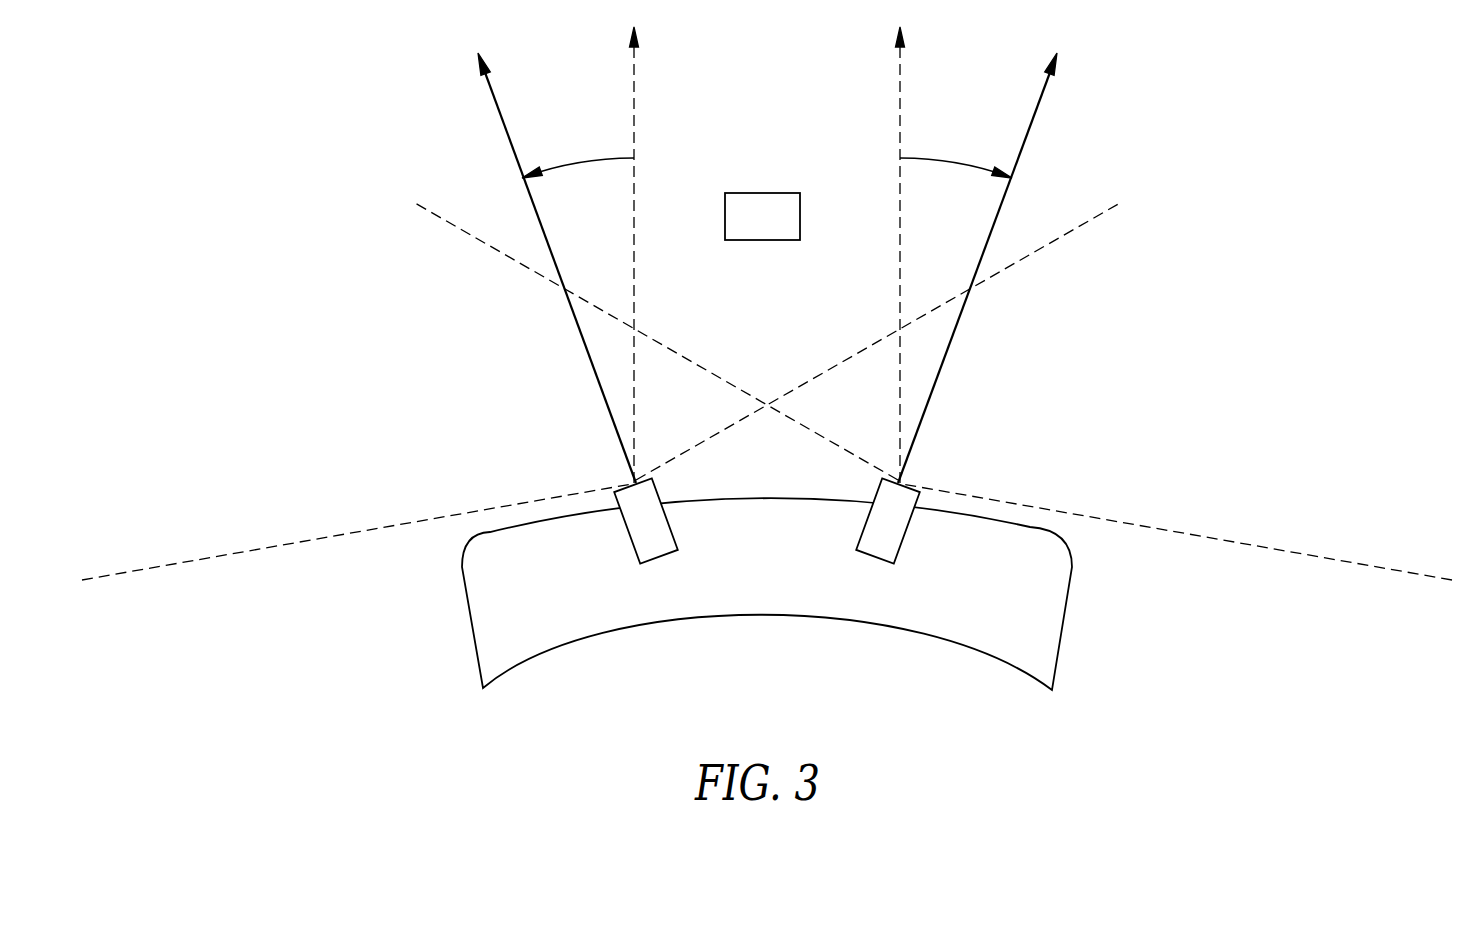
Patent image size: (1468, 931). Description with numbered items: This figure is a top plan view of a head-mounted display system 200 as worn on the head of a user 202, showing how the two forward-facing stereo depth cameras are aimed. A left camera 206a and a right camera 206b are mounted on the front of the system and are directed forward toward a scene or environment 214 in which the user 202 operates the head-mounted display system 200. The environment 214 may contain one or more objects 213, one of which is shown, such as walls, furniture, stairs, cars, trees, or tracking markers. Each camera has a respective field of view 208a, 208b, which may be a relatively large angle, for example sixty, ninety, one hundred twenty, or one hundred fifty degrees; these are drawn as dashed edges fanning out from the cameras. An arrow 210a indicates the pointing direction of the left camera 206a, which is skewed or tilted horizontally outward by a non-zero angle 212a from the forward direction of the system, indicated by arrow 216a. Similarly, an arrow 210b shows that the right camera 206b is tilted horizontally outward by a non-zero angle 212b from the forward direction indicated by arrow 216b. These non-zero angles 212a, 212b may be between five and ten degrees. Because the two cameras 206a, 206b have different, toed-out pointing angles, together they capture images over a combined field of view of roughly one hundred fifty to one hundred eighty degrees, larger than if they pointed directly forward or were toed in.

The head-mounted display system 200 is at (1146, 460).
The user 202 is at (1060, 568).
The left camera 206a is at (660, 555).
The right camera 206b is at (877, 555).
The field of view 208a is at (170, 567).
The field of view 208b is at (1367, 565).
The arrow 210a is at (497, 107).
The arrow 210b is at (1037, 110).
The non-zero angle 212a is at (580, 165).
The non-zero angle 212b is at (958, 165).
The object 213 is at (779, 226).
The environment 214 is at (789, 136).
The arrow 216a is at (633, 82).
The arrow 216b is at (902, 68).